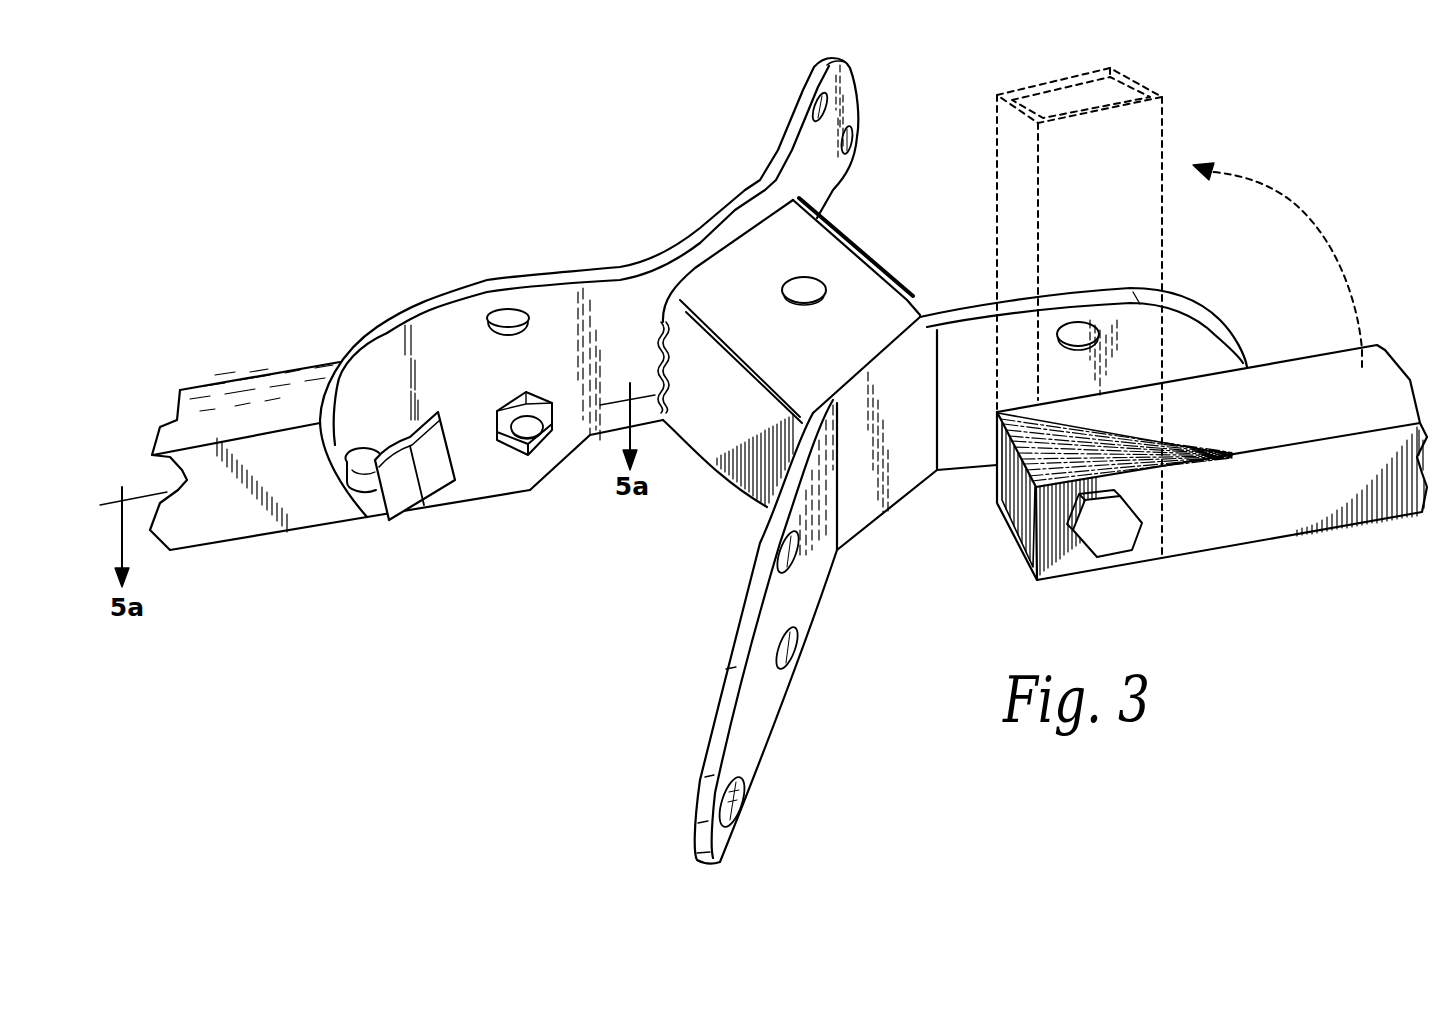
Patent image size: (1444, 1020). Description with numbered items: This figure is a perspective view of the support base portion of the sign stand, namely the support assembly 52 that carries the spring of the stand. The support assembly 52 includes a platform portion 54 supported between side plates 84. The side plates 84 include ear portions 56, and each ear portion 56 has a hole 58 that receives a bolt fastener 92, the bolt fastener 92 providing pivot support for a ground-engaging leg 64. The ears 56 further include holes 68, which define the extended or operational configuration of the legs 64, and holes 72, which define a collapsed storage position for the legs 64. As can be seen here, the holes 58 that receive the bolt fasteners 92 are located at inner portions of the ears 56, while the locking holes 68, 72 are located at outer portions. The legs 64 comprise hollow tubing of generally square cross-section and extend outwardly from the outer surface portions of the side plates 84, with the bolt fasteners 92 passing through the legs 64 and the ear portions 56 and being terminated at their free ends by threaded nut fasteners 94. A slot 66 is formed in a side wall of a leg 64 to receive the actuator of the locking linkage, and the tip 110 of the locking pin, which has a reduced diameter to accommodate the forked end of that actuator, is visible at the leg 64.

The support assembly 52 is at (720, 470).
The platform portion 54 is at (870, 287).
The ear portions 56 is at (852, 96).
The holes 58 is at (797, 653).
The ground-engaging legs 64 is at (261, 380).
The slot 66 is at (453, 481).
The holes 68 is at (853, 140).
The holes 72 is at (827, 88).
The side plates 84 is at (707, 217).
The bolt fastener 92 is at (1103, 538).
The threaded nut fasteners 94 is at (538, 448).
The tip 110 is at (373, 493).